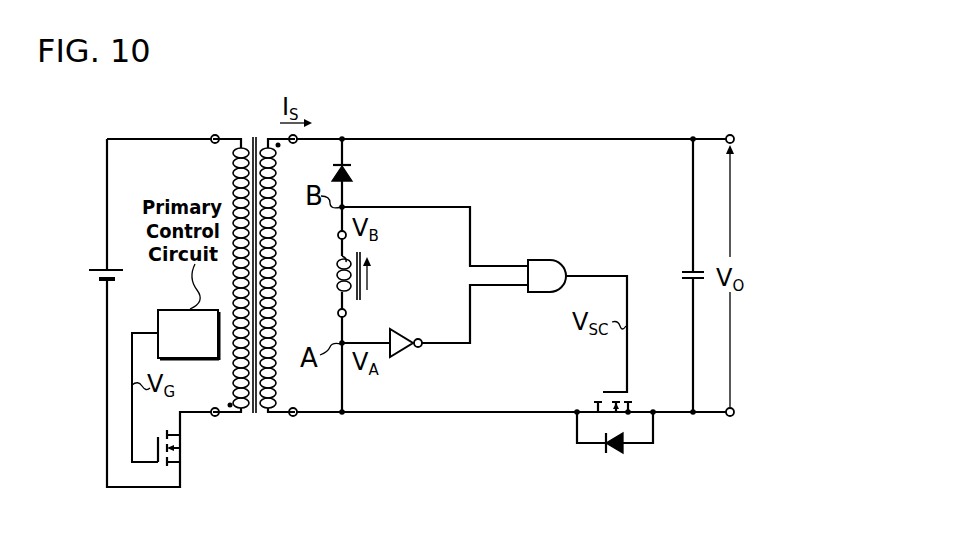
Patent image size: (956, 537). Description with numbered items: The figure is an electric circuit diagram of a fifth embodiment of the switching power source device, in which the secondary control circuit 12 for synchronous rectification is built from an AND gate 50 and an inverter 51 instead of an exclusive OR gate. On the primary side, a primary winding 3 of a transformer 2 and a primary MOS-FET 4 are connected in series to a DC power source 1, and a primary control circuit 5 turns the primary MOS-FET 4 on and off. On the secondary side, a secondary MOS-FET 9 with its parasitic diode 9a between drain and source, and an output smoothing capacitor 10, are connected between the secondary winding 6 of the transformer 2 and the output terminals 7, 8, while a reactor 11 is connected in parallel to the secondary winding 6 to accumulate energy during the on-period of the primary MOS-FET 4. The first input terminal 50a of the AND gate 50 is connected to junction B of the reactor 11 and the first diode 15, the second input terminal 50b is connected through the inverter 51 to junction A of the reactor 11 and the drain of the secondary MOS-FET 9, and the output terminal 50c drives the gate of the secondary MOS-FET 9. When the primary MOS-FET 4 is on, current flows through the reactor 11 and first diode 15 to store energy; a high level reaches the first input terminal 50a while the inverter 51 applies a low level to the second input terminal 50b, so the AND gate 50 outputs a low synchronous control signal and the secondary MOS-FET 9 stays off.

The DC power source 1 is at (100, 268).
The transformer 2 is at (255, 134).
The primary winding 3 is at (233, 195).
The primary MOS-FET 4 is at (182, 448).
The primary control circuit 5 is at (197, 349).
The secondary winding 6 is at (278, 292).
The output terminal 7 is at (730, 134).
The output terminal 8 is at (730, 417).
The secondary MOS-FET 9 is at (598, 394).
The parasitic diode 9a is at (612, 448).
The output smoothing capacitor 10 is at (684, 280).
The reactor 11 is at (337, 262).
The secondary control circuit 12 is at (572, 196).
The first diode 15 is at (352, 168).
The AND gate 50 is at (548, 259).
The first input terminal 50a is at (500, 265).
The second input terminal 50b is at (500, 287).
The output terminal 50c is at (598, 274).
The inverter 51 is at (405, 330).